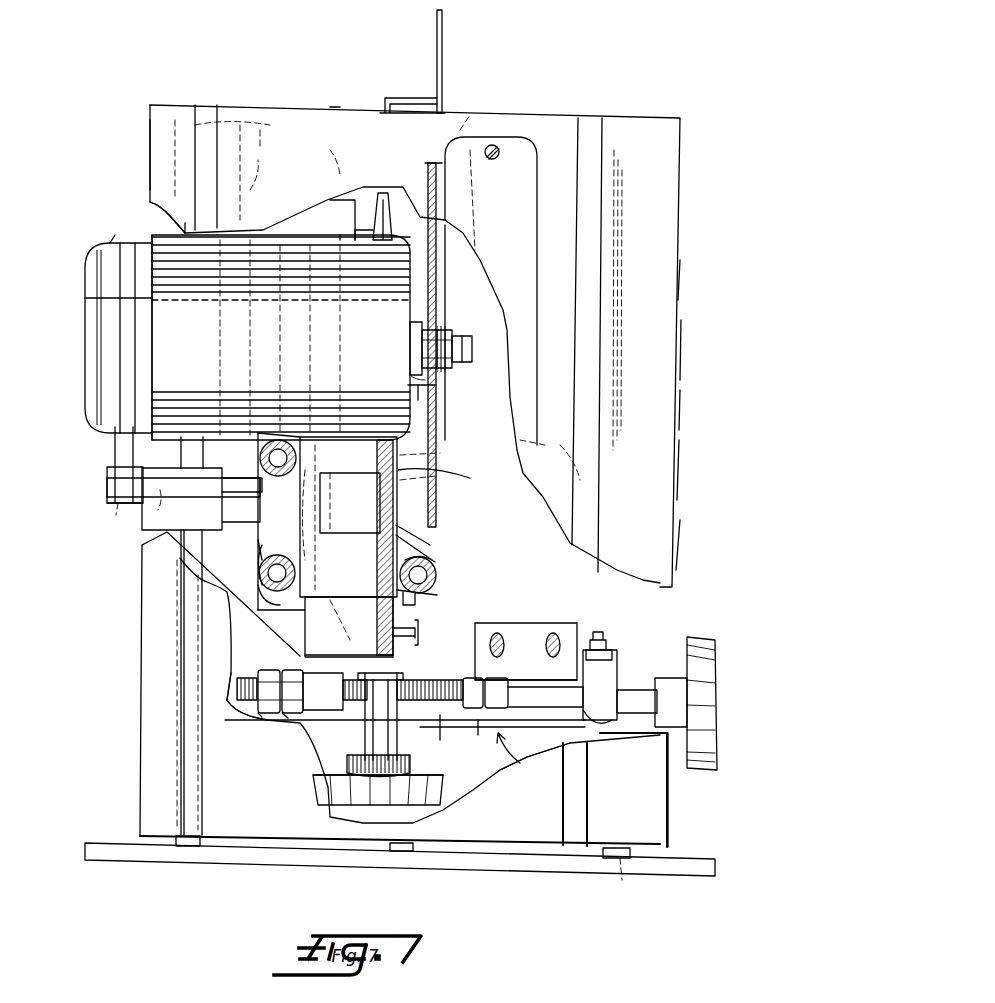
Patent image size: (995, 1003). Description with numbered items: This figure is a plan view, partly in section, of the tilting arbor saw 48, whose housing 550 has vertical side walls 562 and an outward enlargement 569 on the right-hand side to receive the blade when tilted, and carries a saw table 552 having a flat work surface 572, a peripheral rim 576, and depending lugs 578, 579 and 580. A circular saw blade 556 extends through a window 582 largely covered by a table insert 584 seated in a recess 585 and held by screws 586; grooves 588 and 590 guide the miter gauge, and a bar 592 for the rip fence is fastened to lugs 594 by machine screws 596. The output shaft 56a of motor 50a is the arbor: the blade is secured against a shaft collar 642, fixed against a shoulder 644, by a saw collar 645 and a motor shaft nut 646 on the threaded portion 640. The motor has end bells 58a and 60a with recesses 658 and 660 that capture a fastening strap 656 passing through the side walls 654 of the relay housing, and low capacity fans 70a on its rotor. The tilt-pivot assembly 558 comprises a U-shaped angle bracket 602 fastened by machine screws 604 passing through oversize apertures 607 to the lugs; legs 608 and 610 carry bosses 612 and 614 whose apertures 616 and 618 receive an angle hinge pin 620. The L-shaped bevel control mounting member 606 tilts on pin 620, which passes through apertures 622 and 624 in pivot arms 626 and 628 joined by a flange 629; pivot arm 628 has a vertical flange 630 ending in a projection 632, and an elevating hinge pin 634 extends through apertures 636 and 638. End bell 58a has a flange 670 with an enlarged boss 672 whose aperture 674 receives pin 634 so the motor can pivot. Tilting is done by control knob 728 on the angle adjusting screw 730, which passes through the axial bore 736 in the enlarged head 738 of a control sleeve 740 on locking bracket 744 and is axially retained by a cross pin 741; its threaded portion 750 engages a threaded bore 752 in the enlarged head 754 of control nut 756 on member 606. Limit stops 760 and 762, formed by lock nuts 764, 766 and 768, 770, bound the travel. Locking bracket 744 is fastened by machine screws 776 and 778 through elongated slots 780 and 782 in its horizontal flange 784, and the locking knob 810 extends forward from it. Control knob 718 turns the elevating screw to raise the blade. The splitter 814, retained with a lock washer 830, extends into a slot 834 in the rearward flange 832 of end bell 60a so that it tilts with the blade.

The tilting arbor saw 48 is at (243, 93).
The work surface 572 is at (312, 110).
The peripheral rim 576 is at (150, 137).
The side walls 654 is at (258, 180).
The fastening strap 656 is at (150, 205).
The end bell 58a is at (110, 240).
The recess 658 is at (128, 248).
The fan 70a is at (90, 298).
The motor 50a is at (73, 336).
The lug 579 is at (260, 440).
The angle bracket 602 is at (316, 419).
The machine screws 604 is at (296, 452).
The leg 610 is at (350, 493).
The aperture 618 is at (435, 452).
The boss 614 is at (451, 473).
The aperture 638 is at (432, 480).
The pivot arm 628 is at (396, 512).
The boss 612 is at (428, 542).
The aperture 616 is at (430, 560).
The apertures 607 is at (278, 561).
The lug 580 is at (445, 596).
The angle hinge pin 620 is at (418, 603).
The pivot arm 626 is at (420, 636).
The aperture 622 is at (368, 645).
The flange 629 is at (329, 620).
The leg 608 is at (348, 604).
The aperture 624 is at (316, 516).
The lug 578 is at (272, 598).
The tilt-pivot assembly 558 is at (252, 470).
The projection 632 is at (172, 475).
The flange 670 is at (115, 448).
The elevating hinge pin 634 is at (108, 485).
The enlarged boss 672 is at (110, 512).
The aperture 674 is at (113, 521).
The bevel control mounting member 606 is at (156, 542).
The side walls 562 is at (632, 133).
The vertical flange 630 is at (260, 512).
The apertures 636 is at (172, 510).
The splitter 814 is at (430, 61).
The lock washer 830 is at (397, 100).
The slot 834 is at (376, 192).
The flange 832 is at (340, 195).
The recess 660 is at (356, 236).
The end bell 60a is at (435, 215).
The window 582 is at (464, 114).
The screws 586 is at (493, 145).
The table insert 584 is at (445, 243).
The circular saw blade 556 is at (445, 275).
The shaft collar 642 is at (415, 320).
The motor shaft nut 646 is at (450, 333).
The motor output shaft 56a is at (472, 345).
The threaded portion 640 is at (460, 366).
The saw collar 645 is at (440, 388).
The shoulder 644 is at (432, 400).
The recess 585 is at (550, 460).
The enlargement 569 is at (680, 360).
The housing 550 is at (690, 410).
The saw table 552 is at (678, 466).
The locking bracket 744 is at (528, 614).
The machine screw 776 is at (500, 632).
The machine screw 778 is at (552, 632).
The horizontal flange 784 is at (598, 630).
The elongated slot 780 is at (490, 655).
The elongated slot 782 is at (617, 660).
The cross pin 741 is at (637, 685).
The control knob 728 is at (718, 670).
The axial bore 736 is at (625, 725).
The control sleeve 740 is at (612, 715).
The enlarged head 738 is at (578, 709).
The lock nut 766 is at (512, 698).
The enlarged head 754 is at (302, 666).
The threaded bore 752 is at (320, 712).
The threaded portion 750 is at (410, 766).
The lock nut 768 is at (347, 758).
The control knob 718 is at (368, 797).
The locking knob 810 is at (440, 777).
The lock nut 764 is at (480, 740).
The angle adjusting screw 730 is at (524, 747).
The limit stop 760 is at (518, 766).
The limit stop 762 is at (268, 715).
The lock nut 770 is at (292, 715).
The control nut 756 is at (298, 738).
The groove 588 is at (196, 804).
The groove 590 is at (588, 840).
The bar 592 is at (117, 862).
The lugs 594 is at (185, 848).
The machine screws 596 is at (622, 884).